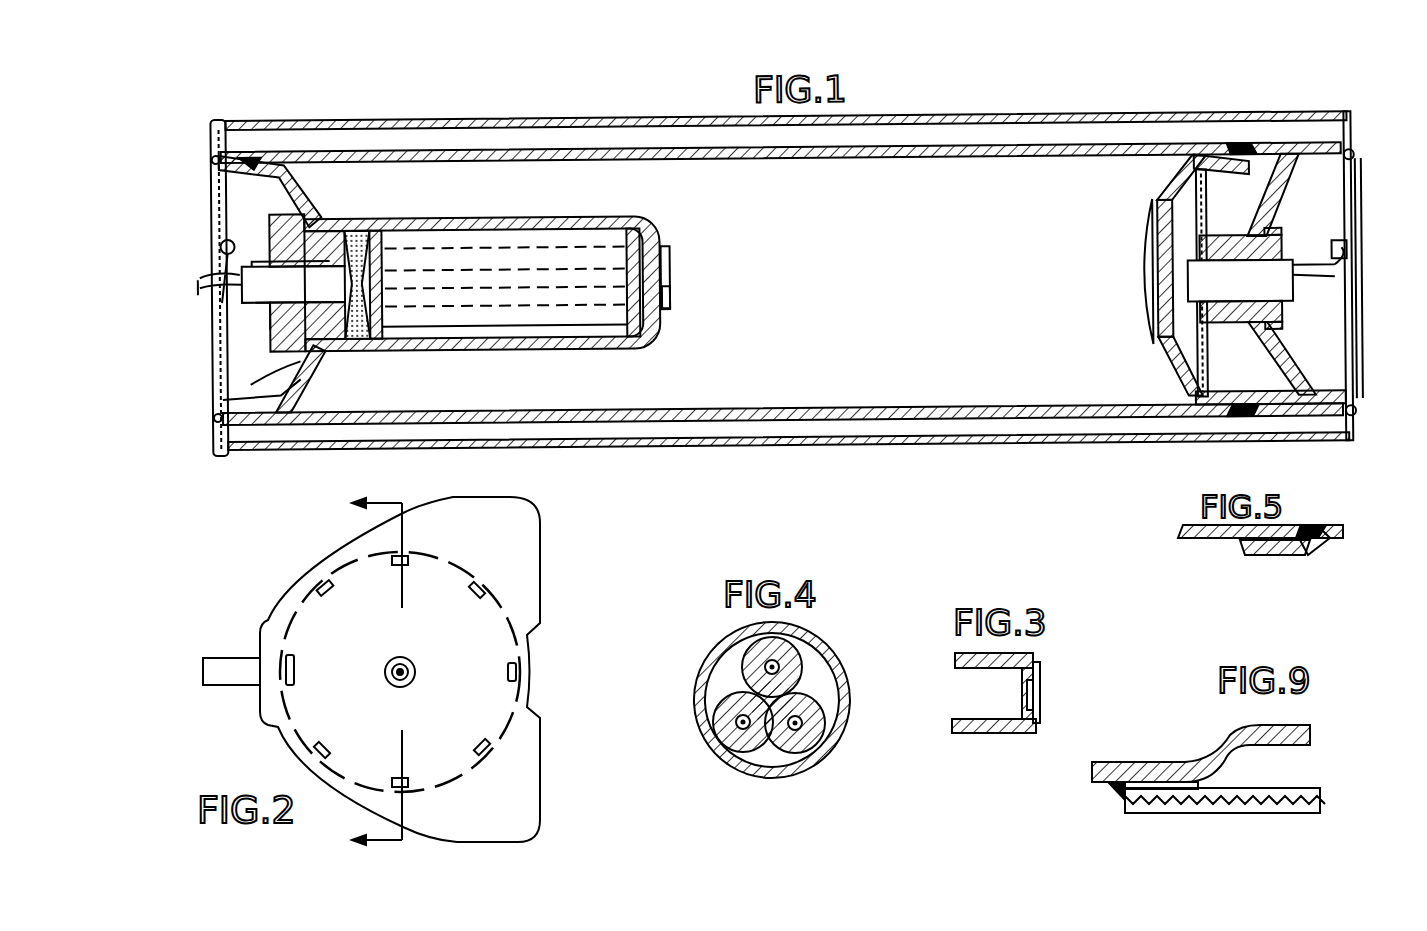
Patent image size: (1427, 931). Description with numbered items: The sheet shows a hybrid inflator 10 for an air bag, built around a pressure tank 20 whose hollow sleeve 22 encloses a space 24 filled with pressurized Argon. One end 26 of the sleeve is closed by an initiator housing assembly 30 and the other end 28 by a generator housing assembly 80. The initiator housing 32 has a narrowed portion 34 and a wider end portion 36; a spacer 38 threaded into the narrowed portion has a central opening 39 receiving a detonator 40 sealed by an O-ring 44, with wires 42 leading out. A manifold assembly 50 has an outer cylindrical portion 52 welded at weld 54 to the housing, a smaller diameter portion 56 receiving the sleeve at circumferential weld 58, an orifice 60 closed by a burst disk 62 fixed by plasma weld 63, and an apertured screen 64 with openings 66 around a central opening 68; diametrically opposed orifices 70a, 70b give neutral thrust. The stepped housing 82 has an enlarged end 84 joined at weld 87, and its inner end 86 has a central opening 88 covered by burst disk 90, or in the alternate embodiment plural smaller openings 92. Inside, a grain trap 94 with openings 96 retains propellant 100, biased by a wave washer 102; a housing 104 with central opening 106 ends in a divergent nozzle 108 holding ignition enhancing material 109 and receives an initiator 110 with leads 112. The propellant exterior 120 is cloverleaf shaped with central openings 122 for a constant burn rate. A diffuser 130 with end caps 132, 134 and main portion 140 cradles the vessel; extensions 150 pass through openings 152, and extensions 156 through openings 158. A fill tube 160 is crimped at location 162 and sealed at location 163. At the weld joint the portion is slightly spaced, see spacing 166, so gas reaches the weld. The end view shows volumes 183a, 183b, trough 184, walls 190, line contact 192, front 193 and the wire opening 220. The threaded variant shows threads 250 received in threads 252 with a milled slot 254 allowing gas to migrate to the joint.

In FIG. 1, the hybrid inflator 10 is at (540, 104).
In FIG. 1, the pressure tank 20 is at (940, 150).
In FIG. 1, the hollow sleeve 22 is at (880, 152).
In FIG. 5, the hollow sleeve 22 is at (1185, 525).
In FIG. 9, the hollow sleeve 22 is at (1232, 813).
In FIG. 1, the space 24 is at (832, 206).
In FIG. 1, the end of sleeve 26 is at (1105, 125).
In FIG. 5, the end of sleeve 26 is at (1210, 538).
In FIG. 1, the end of sleeve 28 is at (268, 165).
In FIG. 1, the initiator housing assembly 30 is at (1195, 350).
In FIG. 1, the initiator housing 32 is at (1290, 365).
In FIG. 1, the narrowed portion 34 is at (1235, 330).
In FIG. 1, the wider end portion 36 is at (1358, 165).
In FIG. 1, the spacer 38 is at (1285, 320).
In FIG. 1, the central opening 39 is at (1245, 244).
In FIG. 1, the detonator 40 is at (1257, 296).
In FIG. 1, the actuation leads 42 is at (216, 262).
In FIG. 1, the O-ring 44 is at (1278, 244).
In FIG. 1, the manifold assembly 50 is at (1170, 425).
In FIG. 5, the manifold assembly 50 is at (1262, 555).
In FIG. 1, the outer cylindrical portion 52 is at (1318, 420).
In FIG. 1, the weld 54 is at (1335, 440).
In FIG. 1, the smaller diameter cylindrical portion 56 is at (1235, 425).
In FIG. 5, the smaller diameter cylindrical portion 56 is at (1315, 555).
In FIG. 1, the circumferential weld 58 is at (1238, 152).
In FIG. 5, the circumferential weld 58 is at (1315, 527).
In FIG. 1, the orifice 60 is at (1158, 316).
In FIG. 1, the burst disk 62 is at (1148, 262).
In FIG. 1, the circumferential plasma weld 63 is at (1162, 348).
In FIG. 1, the apertured screen 64 is at (1170, 190).
In FIG. 1, the openings 66 is at (1208, 372).
In FIG. 1, the central opening 68 is at (1158, 250).
In FIG. 1, the orifice 70a is at (1278, 420).
In FIG. 1, the orifice 70b is at (1280, 152).
In FIG. 1, the generator housing assembly 80 is at (428, 220).
In FIG. 1, the stepped housing 82 is at (450, 220).
In FIG. 4, the stepped housing 82 is at (848, 662).
In FIG. 9, the stepped housing 82 is at (1230, 748).
In FIG. 1, the enlarged end 84 is at (280, 178).
In FIG. 1, the inner end 86 is at (650, 237).
In FIG. 3, the inner end 86 is at (1035, 658).
In FIG. 1, the circumferential weld 87 is at (248, 160).
In FIG. 9, the circumferential weld 87 is at (1115, 792).
In FIG. 1, the central opening 88 is at (670, 295).
In FIG. 1, the burst disk 90 is at (670, 265).
In FIG. 3, the burst disk 90 is at (1040, 700).
In FIG. 3, the smaller openings 92 is at (1027, 694).
In FIG. 1, the grain trap 94 is at (632, 225).
In FIG. 1, the openings 96 is at (605, 342).
In FIG. 1, the propellant 100 is at (535, 332).
In FIG. 1, the wave washer 102 is at (377, 345).
In FIG. 1, the housing 104 is at (272, 220).
In FIG. 1, the central opening 106 is at (270, 320).
In FIG. 1, the divergent nozzle 108 is at (358, 340).
In FIG. 1, the ignition enhancing material 109 is at (340, 230).
In FIG. 1, the initiator 110 is at (242, 303).
In FIG. 1, the electrical leads 112 is at (228, 303).
In FIG. 4, the exterior of propellant 120 is at (740, 680).
In FIG. 4, the central opening 122 is at (800, 640).
In FIG. 1, the diffuser 130 is at (1020, 121).
In FIG. 1, the end cap 132 is at (1350, 121).
In FIG. 1, the end cap 134 is at (212, 133).
In FIG. 2, the end cap 134 is at (510, 520).
In FIG. 1, the main portion 140 is at (735, 108).
In FIG. 1, the extensions 150 is at (215, 418).
In FIG. 2, the extensions 150 is at (318, 588).
In FIG. 2, the openings 152 is at (330, 590).
In FIG. 1, the extensions 156 is at (1357, 418).
In FIG. 1, the openings 158 is at (1352, 405).
In FIG. 1, the fill tube 160 is at (302, 413).
In FIG. 1, the crimped location 162 is at (222, 400).
In FIG. 1, the seal location 163 is at (250, 385).
In FIG. 5, the spacing 166 is at (1235, 540).
In FIG. 2, the volume 183a is at (522, 533).
In FIG. 2, the volume 183b is at (522, 797).
In FIG. 2, the trough 184 is at (263, 620).
In FIG. 2, the walls 190 is at (290, 740).
In FIG. 2, the line contact 192 is at (532, 672).
In FIG. 2, the front 193 is at (548, 590).
In FIG. 1, the opening 220 is at (198, 280).
In FIG. 2, the opening 220 is at (412, 684).
In FIG. 9, the threads 250 is at (1143, 780).
In FIG. 9, the threads 252 is at (1170, 790).
In FIG. 9, the milled slot 254 is at (1165, 775).